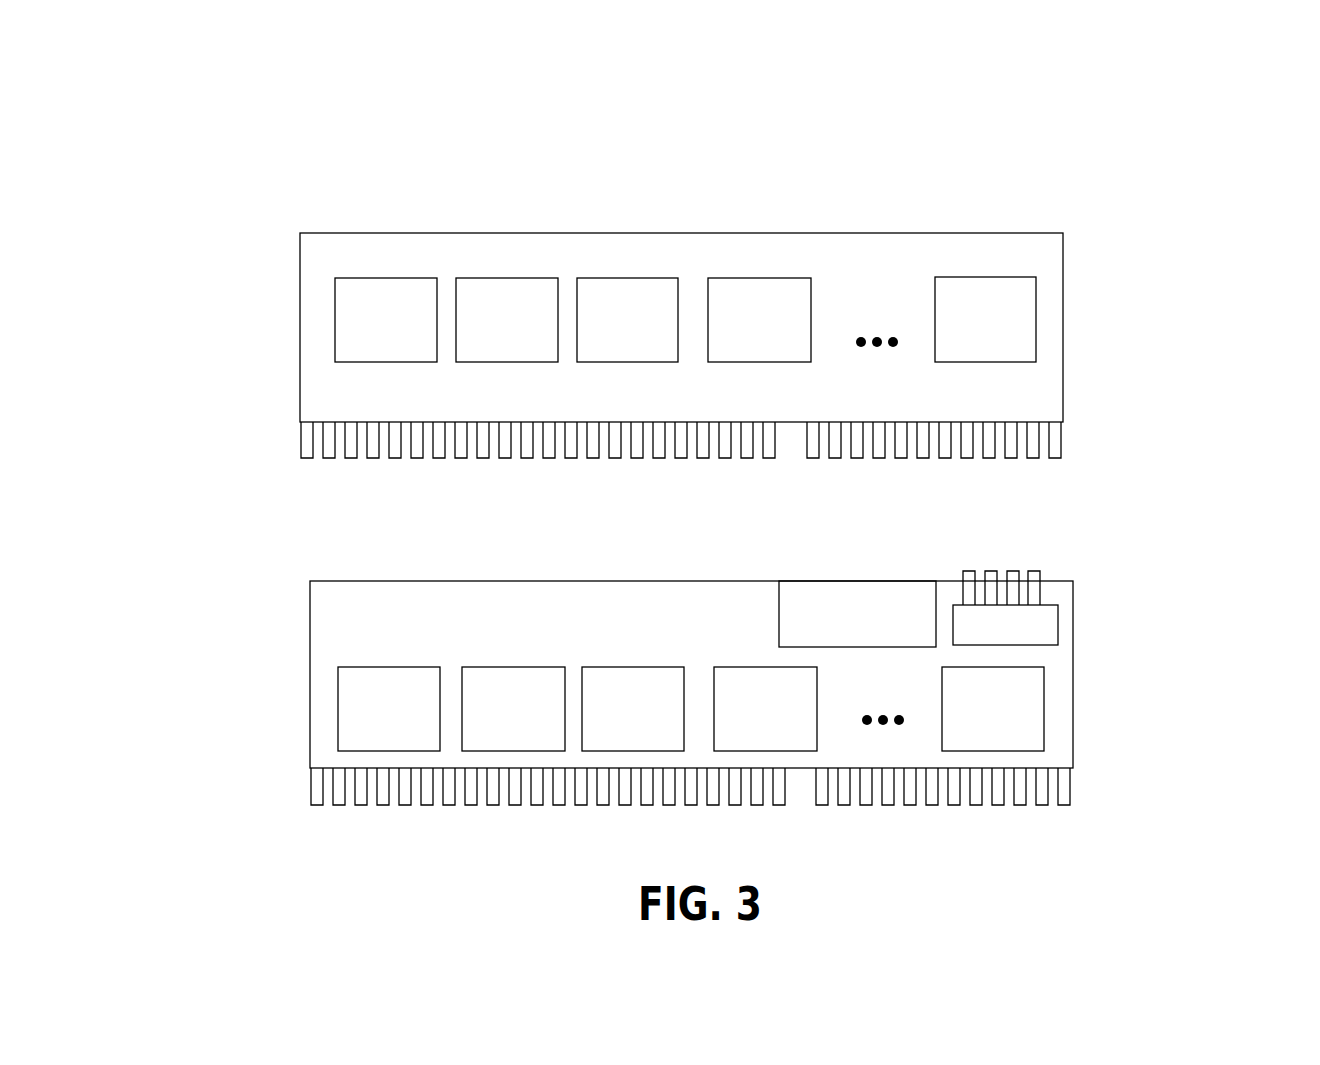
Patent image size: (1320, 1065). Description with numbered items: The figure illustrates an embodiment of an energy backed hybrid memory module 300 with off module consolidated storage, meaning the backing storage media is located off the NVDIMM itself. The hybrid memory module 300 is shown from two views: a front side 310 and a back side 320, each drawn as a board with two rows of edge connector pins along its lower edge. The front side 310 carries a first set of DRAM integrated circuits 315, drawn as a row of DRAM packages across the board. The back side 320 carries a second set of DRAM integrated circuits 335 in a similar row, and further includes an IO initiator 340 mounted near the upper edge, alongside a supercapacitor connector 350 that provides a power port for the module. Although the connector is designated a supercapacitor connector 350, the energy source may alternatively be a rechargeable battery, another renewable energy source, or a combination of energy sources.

The hybrid memory module 300 is at (248, 163).
The front side 310 is at (433, 213).
The first set of DRAM integrated circuits 315 is at (960, 277).
The back side 320 is at (450, 570).
The second set of DRAM integrated circuits 335 is at (373, 667).
The IO initiator 340 is at (811, 581).
The supercapacitor connector 350 is at (1152, 560).